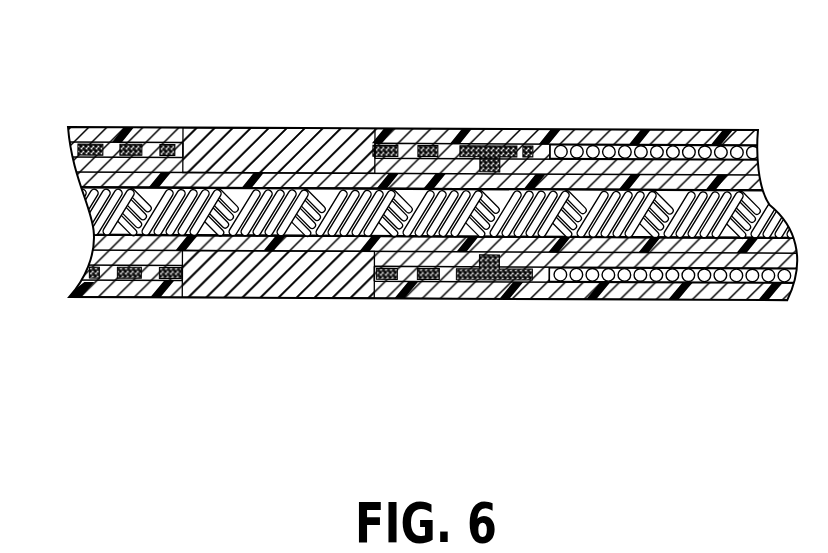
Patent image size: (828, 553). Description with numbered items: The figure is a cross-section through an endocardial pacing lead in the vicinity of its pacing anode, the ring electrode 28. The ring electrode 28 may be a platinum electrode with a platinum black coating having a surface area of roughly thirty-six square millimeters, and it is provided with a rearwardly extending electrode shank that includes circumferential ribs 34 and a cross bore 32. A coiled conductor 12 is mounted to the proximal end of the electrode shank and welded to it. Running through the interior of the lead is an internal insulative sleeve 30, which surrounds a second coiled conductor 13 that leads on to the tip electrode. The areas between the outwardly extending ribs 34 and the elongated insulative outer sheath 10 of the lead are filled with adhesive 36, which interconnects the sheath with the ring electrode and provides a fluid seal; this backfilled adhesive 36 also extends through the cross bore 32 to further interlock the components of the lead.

The insulative outer sheath 10 is at (131, 133).
The coiled conductor 12 is at (693, 150).
The second coiled conductor 13 is at (668, 223).
The ring electrode 28 is at (263, 133).
The internal insulative sleeve 30 is at (607, 182).
The cross bore 32 is at (507, 250).
The circumferential ribs 34 is at (403, 278).
The filled polymer layer 36 is at (150, 270).